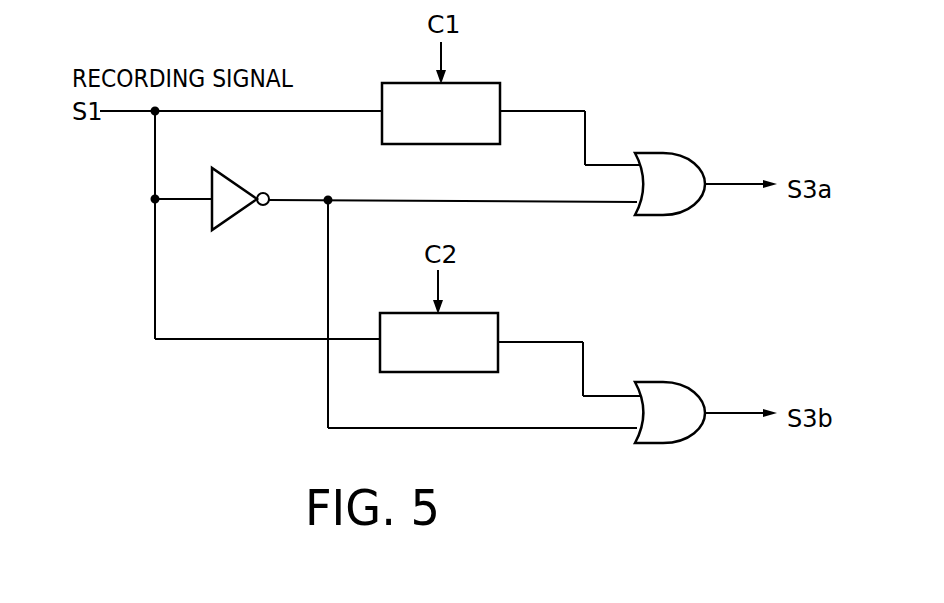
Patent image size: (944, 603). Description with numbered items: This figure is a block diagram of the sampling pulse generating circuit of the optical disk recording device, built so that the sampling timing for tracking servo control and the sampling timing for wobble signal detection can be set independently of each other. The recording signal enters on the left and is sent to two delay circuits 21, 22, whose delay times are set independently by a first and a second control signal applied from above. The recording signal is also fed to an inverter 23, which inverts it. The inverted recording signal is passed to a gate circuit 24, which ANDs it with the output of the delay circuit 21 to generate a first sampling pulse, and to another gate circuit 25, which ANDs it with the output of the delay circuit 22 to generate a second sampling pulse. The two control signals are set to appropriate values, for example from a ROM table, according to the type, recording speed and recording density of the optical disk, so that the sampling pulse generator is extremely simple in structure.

The delay circuit 21 is at (482, 83).
The delay circuit 22 is at (480, 313).
The inverter 23 is at (249, 139).
The gate circuit 24 is at (672, 153).
The gate circuit 25 is at (672, 382).